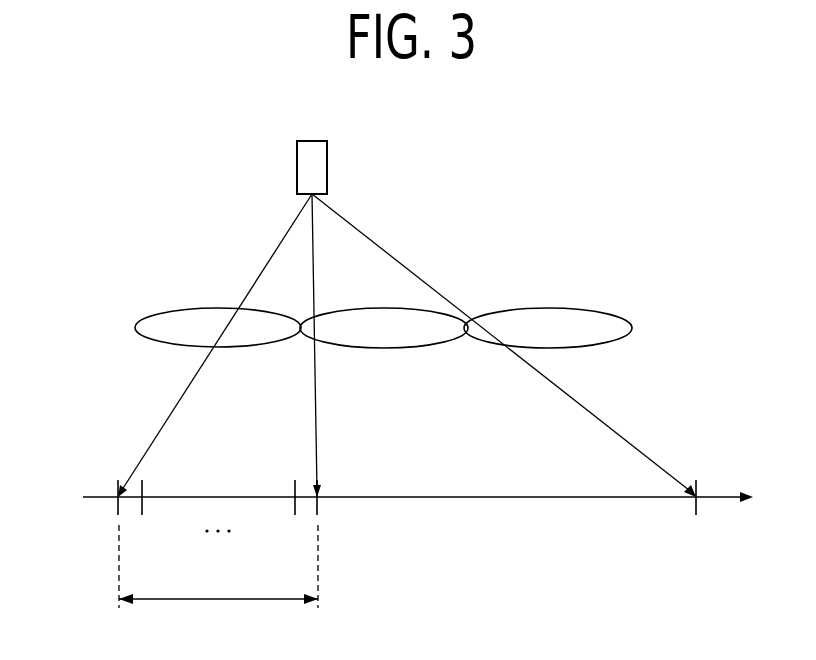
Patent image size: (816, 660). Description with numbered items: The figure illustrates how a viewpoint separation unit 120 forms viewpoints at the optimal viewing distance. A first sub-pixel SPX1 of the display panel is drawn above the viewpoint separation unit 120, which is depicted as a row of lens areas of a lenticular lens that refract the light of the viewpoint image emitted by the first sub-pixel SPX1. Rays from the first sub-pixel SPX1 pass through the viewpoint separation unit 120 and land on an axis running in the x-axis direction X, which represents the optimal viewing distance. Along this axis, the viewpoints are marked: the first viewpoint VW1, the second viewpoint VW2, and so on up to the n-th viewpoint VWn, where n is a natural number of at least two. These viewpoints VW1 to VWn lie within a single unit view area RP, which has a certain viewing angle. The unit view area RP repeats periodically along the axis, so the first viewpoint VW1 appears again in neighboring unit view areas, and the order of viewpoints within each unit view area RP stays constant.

The viewpoint separation unit 120 is at (154, 312).
The first sub-pixel SPX1 is at (327, 167).
The first viewpoint VW1 is at (118, 500).
The second viewpoint VW2 is at (147, 532).
The n-th viewpoint VWn is at (291, 532).
The unit view area RP is at (218, 582).
The x-axis direction X is at (429, 499).